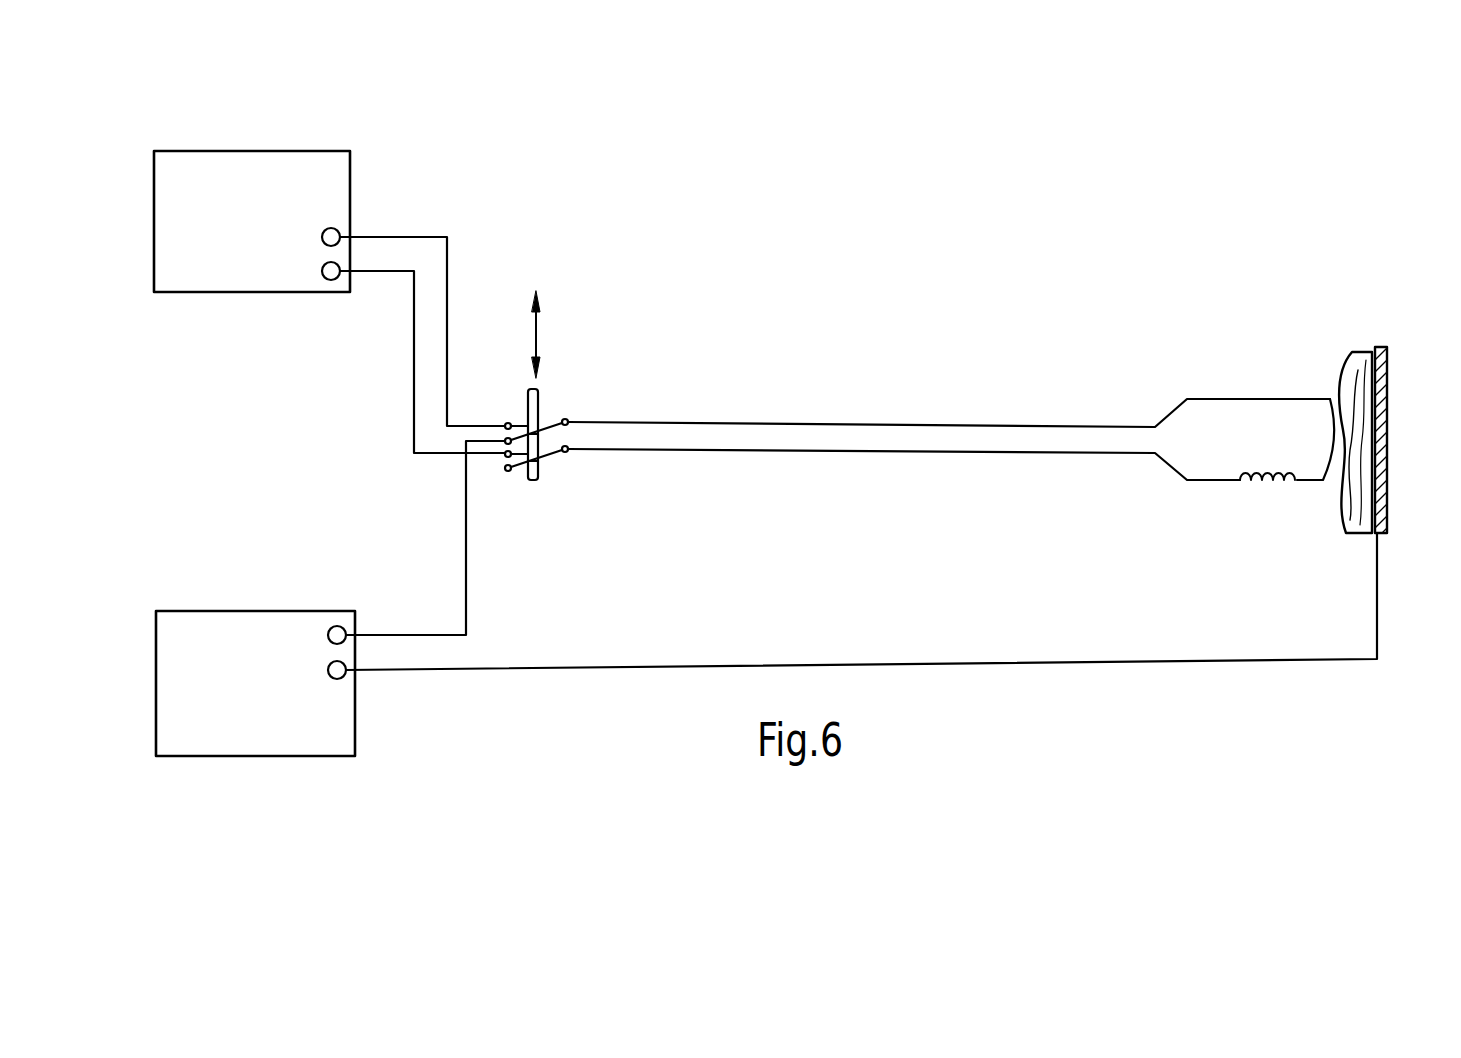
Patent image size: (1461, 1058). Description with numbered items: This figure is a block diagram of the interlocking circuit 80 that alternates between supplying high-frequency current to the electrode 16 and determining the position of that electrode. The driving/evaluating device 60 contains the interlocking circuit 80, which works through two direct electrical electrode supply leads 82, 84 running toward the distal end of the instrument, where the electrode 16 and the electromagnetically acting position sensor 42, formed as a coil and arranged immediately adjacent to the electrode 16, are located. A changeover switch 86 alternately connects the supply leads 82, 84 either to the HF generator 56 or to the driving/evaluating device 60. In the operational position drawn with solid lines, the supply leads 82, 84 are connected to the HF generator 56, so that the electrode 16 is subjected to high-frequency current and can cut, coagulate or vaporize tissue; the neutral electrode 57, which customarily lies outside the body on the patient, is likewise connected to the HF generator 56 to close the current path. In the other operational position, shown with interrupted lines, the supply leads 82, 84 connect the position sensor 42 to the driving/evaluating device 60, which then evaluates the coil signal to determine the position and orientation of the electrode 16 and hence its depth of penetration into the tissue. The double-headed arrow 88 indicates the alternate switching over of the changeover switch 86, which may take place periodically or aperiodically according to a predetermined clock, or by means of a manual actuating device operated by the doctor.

The driving/evaluating device 60 is at (224, 172).
The HF generator 56 is at (202, 732).
The interlocking circuit 80 is at (591, 297).
The electrode supply lead 82 is at (810, 423).
The electrode supply lead 84 is at (815, 454).
The changeover switch 86 is at (535, 481).
The double-headed arrow 88 is at (536, 330).
The position sensor 42 is at (1255, 476).
The electrode 16 is at (1337, 397).
The neutral electrode 57 is at (1388, 367).